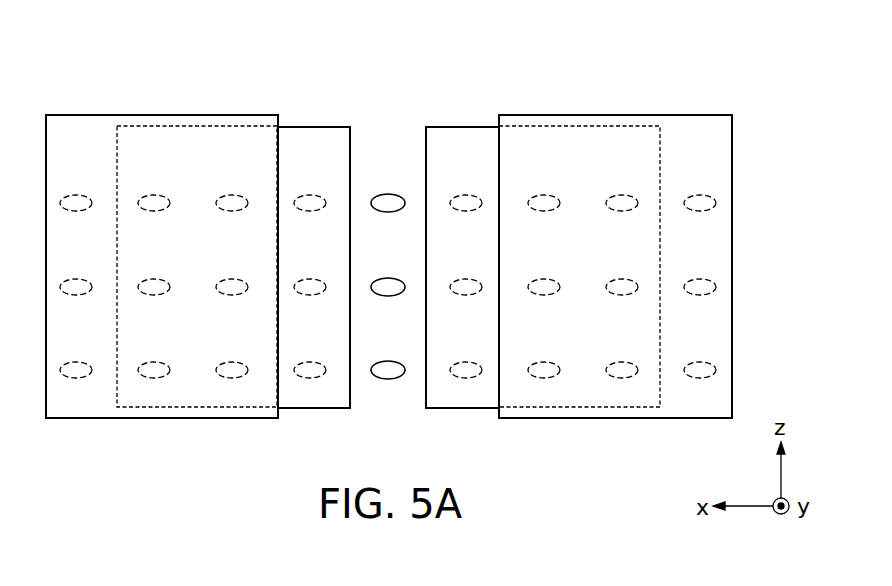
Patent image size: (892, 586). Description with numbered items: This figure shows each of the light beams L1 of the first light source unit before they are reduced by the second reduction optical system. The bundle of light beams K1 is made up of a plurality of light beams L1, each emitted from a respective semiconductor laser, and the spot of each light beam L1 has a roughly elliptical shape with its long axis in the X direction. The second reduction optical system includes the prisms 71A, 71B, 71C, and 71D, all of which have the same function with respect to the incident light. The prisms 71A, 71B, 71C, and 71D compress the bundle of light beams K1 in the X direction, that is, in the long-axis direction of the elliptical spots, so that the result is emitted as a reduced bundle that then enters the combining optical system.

The prism 71A is at (550, 115).
The prism 71B is at (454, 125).
The prism 71C is at (300, 125).
The prism 71D is at (110, 113).
The light beam L1 is at (710, 194).
The bundle of light beams K1 is at (728, 203).